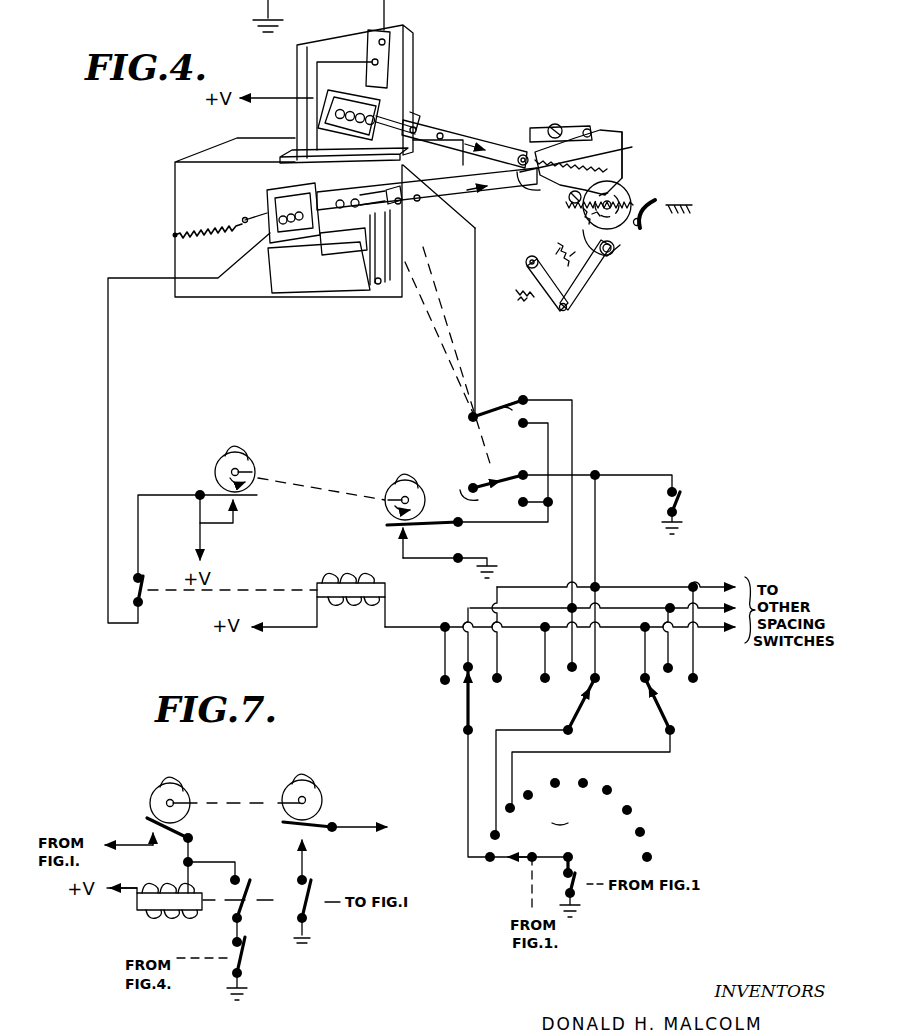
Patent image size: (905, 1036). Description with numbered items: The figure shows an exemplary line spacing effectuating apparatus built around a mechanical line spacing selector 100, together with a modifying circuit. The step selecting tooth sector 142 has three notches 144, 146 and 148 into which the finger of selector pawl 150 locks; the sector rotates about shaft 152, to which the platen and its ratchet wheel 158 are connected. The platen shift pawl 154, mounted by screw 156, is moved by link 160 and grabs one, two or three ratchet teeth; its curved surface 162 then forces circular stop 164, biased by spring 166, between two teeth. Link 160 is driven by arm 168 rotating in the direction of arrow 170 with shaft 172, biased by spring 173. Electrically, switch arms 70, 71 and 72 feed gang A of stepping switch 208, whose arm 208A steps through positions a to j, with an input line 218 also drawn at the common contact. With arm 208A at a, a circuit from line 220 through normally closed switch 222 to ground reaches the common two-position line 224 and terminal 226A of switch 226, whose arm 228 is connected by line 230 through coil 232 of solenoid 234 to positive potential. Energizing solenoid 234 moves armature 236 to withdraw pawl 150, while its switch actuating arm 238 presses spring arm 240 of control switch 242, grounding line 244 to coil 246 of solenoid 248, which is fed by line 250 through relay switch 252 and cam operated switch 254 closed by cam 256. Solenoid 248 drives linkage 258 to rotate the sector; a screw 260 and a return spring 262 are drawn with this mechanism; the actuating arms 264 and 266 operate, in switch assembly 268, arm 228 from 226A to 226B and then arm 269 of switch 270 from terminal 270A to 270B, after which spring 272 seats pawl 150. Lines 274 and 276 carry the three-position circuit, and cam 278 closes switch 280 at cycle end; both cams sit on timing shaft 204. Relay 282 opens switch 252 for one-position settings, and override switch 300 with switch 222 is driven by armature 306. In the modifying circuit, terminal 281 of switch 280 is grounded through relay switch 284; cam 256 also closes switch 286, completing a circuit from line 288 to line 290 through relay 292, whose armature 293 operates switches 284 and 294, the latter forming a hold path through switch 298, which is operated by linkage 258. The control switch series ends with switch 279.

In FIG. 4, the mechanical line spacing selector 100 is at (592, 112).
In FIG. 4, the tooth sector 142 is at (622, 158).
In FIG. 4, the notch 144 is at (572, 126).
In FIG. 4, the notch 146 is at (571, 153).
In FIG. 4, the notch 148 is at (557, 200).
In FIG. 4, the selector pawl 150 is at (523, 155).
In FIG. 4, the shaft 152 is at (611, 205).
In FIG. 4, the platen shift pawl 154 is at (588, 268).
In FIG. 4, the screw 156 is at (613, 253).
In FIG. 4, the ratchet wheel 158 is at (615, 190).
In FIG. 4, the link 160 is at (567, 305).
In FIG. 4, the curved surface 162 is at (634, 228).
In FIG. 4, the circular stop 164 is at (640, 230).
In FIG. 4, the spring 166 is at (665, 217).
In FIG. 4, the arm 168 is at (553, 300).
In FIG. 4, the arrow 170 is at (533, 274).
In FIG. 4, the shaft 172 is at (527, 258).
In FIG. 4, the spring 173 is at (518, 296).
In FIG. 4, the shaft 204 is at (306, 484).
In FIG. 4, the stepping switch 208 is at (664, 826).
In FIG. 4, the switch arm 208A is at (534, 855).
In FIG. 4, the input line 218 is at (528, 890).
In FIG. 4, the line 220 is at (470, 607).
In FIG. 4, the switch 222 is at (575, 874).
In FIG. 4, the line 224 is at (574, 428).
In FIG. 4, the switch 226 is at (470, 418).
In FIG. 4, the terminal 226A is at (525, 398).
In FIG. 4, the terminal 226B is at (523, 433).
In FIG. 4, the arm 228 is at (499, 418).
In FIG. 4, the line 230 is at (480, 346).
In FIG. 4, the coil 232 is at (347, 132).
In FIG. 4, the solenoid 234 is at (343, 90).
In FIG. 4, the armature 236 is at (437, 132).
In FIG. 4, the switch actuating arm 238 is at (418, 112).
In FIG. 4, the spring arm 240 is at (408, 64).
In FIG. 4, the control switch 242 is at (414, 30).
In FIG. 4, the line 244 is at (372, 62).
In FIG. 4, the coil 246 is at (283, 235).
In FIG. 4, the solenoid 248 is at (278, 188).
In FIG. 4, the line 250 is at (108, 411).
In FIG. 4, the relay switch 252 is at (145, 582).
In FIG. 4, the cam operated switch 254 is at (248, 500).
In FIG. 4, the cam 256 is at (248, 458).
In FIG. 7, the cam 256 is at (186, 790).
In FIG. 4, the linkage 258 is at (388, 196).
In FIG. 7, the linkage 258 is at (202, 958).
In FIG. 4, the screw 260 is at (572, 204).
In FIG. 4, the spring 262 is at (212, 226).
In FIG. 4, the switch actuating arm 264 is at (405, 214).
In FIG. 4, the switch actuating arm 266 is at (402, 226).
In FIG. 4, the switch assembly 268 is at (345, 287).
In FIG. 4, the switch arm 269 is at (476, 485).
In FIG. 4, the switch 270 is at (484, 478).
In FIG. 4, the terminal 270A is at (586, 470).
In FIG. 4, the terminal 270B is at (524, 507).
In FIG. 4, the spring 272 is at (593, 151).
In FIG. 4, the line 274 is at (645, 585).
In FIG. 4, the line 276 is at (597, 536).
In FIG. 4, the cam 278 is at (390, 488).
In FIG. 7, the cam 278 is at (318, 790).
In FIG. 4, the line space control switch 279 is at (460, 524).
In FIG. 7, the line space control switch 279 is at (338, 819).
In FIG. 4, the switch 280 is at (397, 532).
In FIG. 7, the switch 280 is at (298, 829).
In FIG. 4, the terminal 281 is at (456, 562).
In FIG. 7, the terminal 281 is at (310, 877).
In FIG. 4, the relay 282 is at (350, 602).
In FIG. 7, the relay switch 284 is at (314, 884).
In FIG. 7, the switch 286 is at (180, 836).
In FIG. 7, the line 288 is at (125, 845).
In FIG. 7, the line 290 is at (124, 888).
In FIG. 7, the relay 292 is at (133, 903).
In FIG. 7, the armature 293 is at (262, 903).
In FIG. 7, the switch 294 is at (250, 891).
In FIG. 7, the switch 298 is at (243, 945).
In FIG. 4, the switch 300 is at (684, 502).
In FIG. 4, the armature 306 is at (686, 501).
In FIG. 4, the switch arm 70 is at (468, 724).
In FIG. 4, the switch arm 71 is at (583, 702).
In FIG. 4, the switch arm 72 is at (658, 702).